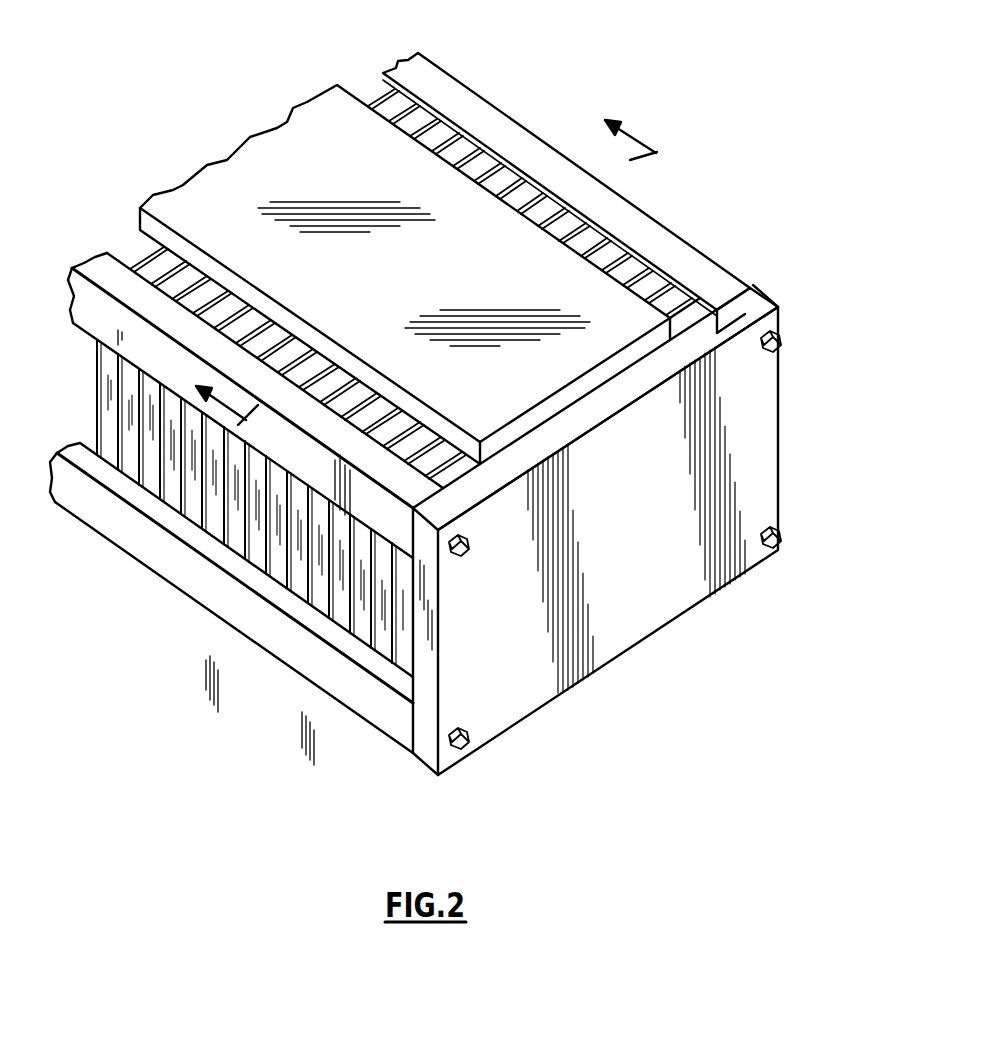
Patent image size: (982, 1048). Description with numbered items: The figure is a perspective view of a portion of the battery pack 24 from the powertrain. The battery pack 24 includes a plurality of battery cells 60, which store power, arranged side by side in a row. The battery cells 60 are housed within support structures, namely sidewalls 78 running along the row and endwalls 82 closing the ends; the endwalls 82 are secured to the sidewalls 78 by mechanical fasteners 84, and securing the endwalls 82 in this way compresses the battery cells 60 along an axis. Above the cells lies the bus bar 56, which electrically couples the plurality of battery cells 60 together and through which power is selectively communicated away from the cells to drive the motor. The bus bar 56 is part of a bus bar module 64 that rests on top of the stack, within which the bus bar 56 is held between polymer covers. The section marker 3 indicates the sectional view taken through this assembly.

The battery pack 24 is at (787, 66).
The bus bar 56 is at (156, 266).
The battery cells 60 is at (342, 573).
The bus bar module 64 is at (300, 162).
The sidewalls 78 is at (680, 253).
The endwalls 82 is at (630, 622).
The mechanical fasteners 84 is at (467, 551).
The section line for FIG. 3 is at (435, 281).